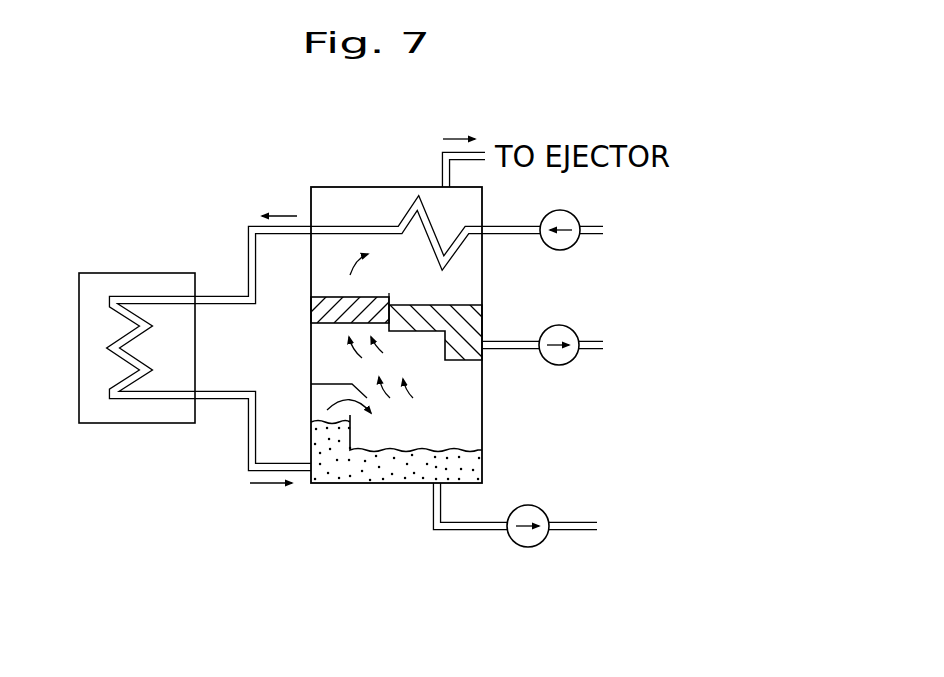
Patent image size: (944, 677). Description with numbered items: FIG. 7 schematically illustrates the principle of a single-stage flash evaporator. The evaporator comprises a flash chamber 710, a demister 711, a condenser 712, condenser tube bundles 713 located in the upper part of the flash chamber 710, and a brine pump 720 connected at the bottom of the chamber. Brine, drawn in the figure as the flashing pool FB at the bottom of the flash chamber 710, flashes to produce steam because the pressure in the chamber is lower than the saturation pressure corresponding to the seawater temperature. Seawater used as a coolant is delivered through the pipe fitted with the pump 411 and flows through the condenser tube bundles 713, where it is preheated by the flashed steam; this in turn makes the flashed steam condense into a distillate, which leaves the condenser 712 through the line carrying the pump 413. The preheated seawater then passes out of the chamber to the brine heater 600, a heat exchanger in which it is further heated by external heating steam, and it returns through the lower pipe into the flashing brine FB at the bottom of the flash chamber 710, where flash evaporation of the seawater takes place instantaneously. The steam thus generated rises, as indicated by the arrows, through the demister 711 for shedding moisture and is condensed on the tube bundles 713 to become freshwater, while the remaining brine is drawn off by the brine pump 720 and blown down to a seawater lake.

The brine heater 600 is at (142, 273).
The flash chamber 710 is at (350, 187).
The demister 711 is at (310, 307).
The condenser 712 is at (482, 320).
The condenser tube bundles 713 is at (428, 235).
The pump (inlet) 411 is at (575, 250).
The pump (outlet) 413 is at (567, 366).
The brine pump 720 is at (527, 548).
The fluid bath FB is at (365, 483).